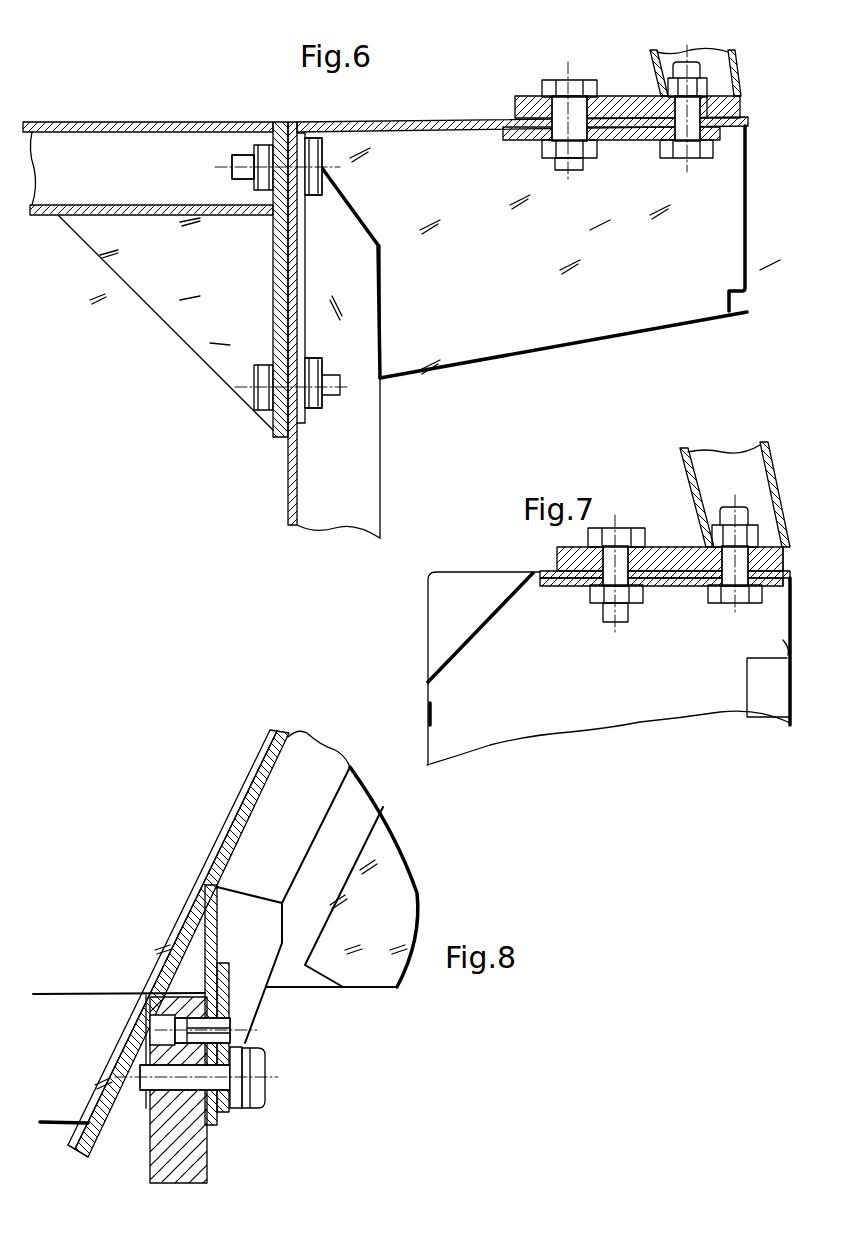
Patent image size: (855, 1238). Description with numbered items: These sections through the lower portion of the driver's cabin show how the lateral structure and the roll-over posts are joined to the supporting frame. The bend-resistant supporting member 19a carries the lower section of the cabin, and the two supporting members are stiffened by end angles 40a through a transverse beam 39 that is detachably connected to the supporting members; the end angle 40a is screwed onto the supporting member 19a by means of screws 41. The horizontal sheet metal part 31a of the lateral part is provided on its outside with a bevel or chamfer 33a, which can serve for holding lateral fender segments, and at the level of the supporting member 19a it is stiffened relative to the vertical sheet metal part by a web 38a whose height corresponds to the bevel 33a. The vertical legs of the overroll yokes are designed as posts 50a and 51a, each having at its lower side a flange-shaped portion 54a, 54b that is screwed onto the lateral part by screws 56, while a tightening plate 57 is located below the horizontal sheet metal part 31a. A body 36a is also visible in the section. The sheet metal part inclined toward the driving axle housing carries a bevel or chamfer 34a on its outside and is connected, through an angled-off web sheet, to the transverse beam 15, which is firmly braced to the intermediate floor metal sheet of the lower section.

In FIG. 6, the transverse beam 39 is at (145, 142).
In FIG. 6, the end angle 40a is at (173, 313).
In FIG. 6, the bend-resistant supporting member 19a is at (350, 472).
In FIG. 6, the web 38a is at (575, 332).
In FIG. 8, the web 38a is at (233, 833).
In FIG. 6, the screw 41 is at (322, 380).
In FIG. 6, the horizontal sheet metal part 31a is at (435, 121).
In FIG. 7, the horizontal sheet metal part 31a is at (522, 576).
In FIG. 6, the tightening plate 57 is at (633, 140).
In FIG. 7, the tightening plate 57 is at (668, 578).
In FIG. 6, the screw 56 is at (580, 168).
In FIG. 7, the screw 56 is at (720, 533).
In FIG. 6, the post 51a is at (655, 65).
In FIG. 6, the flange-shaped portion 54b is at (730, 107).
In FIG. 6, the bevel or chamfer 33a is at (740, 227).
In FIG. 7, the bevel or chamfer 33a is at (783, 642).
In FIG. 7, the body 36a is at (637, 710).
In FIG. 7, the post 50a is at (762, 466).
In FIG. 7, the flange-shaped portion 54a is at (778, 577).
In FIG. 8, the bevel or chamfer 34a is at (187, 907).
In FIG. 8, the transverse beam 15 is at (198, 1165).